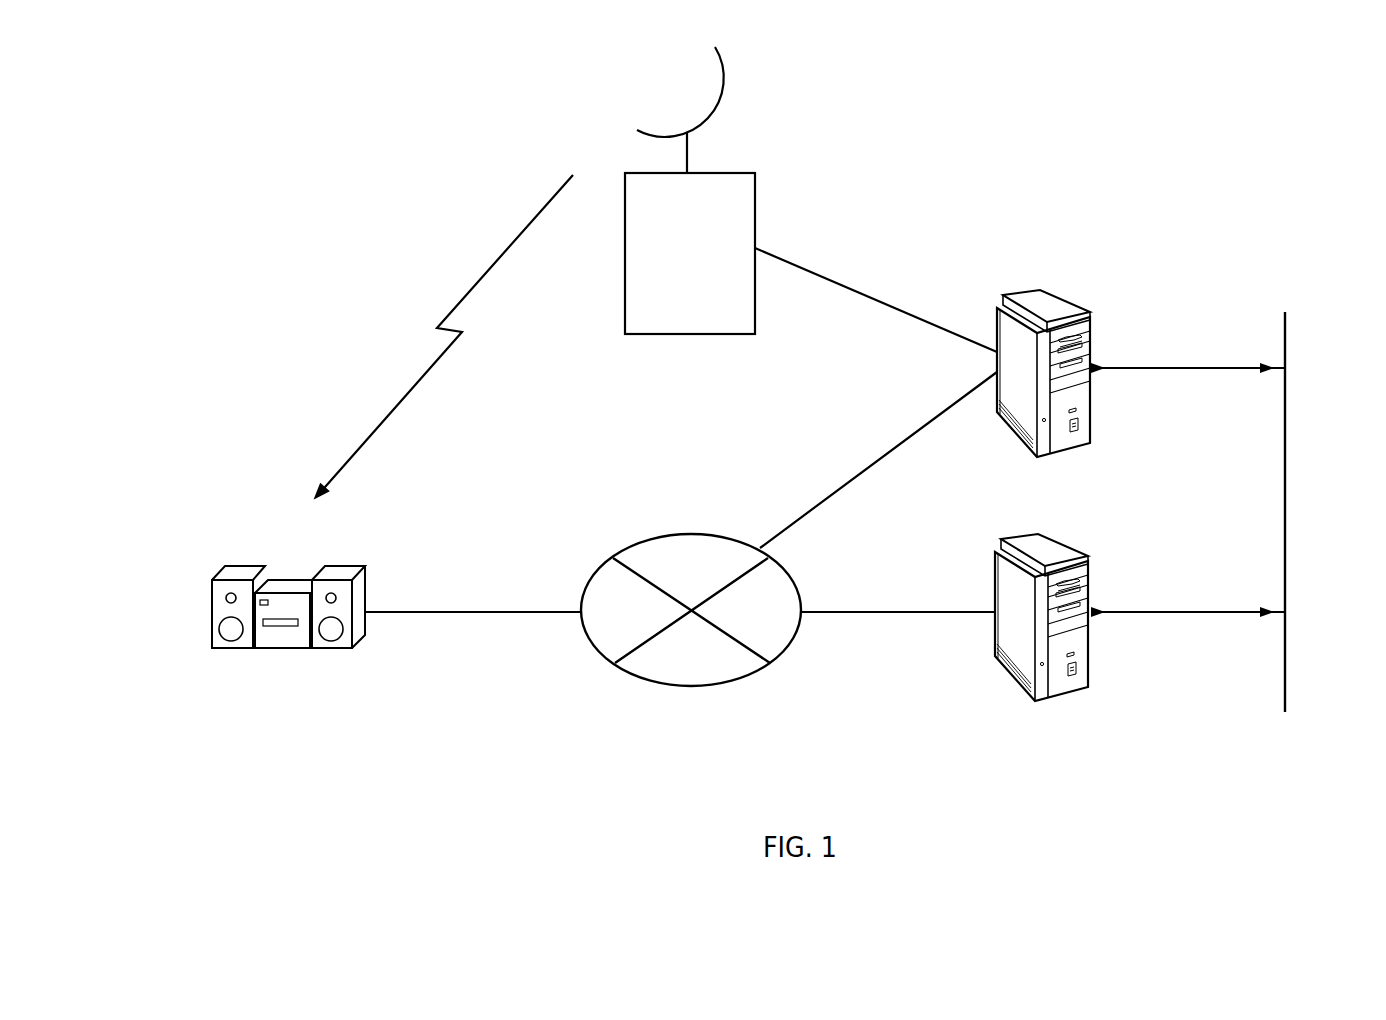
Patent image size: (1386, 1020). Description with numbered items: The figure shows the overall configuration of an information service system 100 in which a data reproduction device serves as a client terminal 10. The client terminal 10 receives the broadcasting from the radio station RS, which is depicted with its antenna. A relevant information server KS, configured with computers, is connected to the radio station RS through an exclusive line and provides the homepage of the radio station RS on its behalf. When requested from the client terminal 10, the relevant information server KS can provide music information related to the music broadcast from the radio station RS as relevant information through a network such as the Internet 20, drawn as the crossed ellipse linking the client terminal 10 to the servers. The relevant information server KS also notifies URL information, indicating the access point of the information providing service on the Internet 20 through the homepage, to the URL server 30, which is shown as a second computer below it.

The information service system 100 is at (338, 133).
The radio station RS is at (745, 173).
The relevant information server KS is at (1050, 297).
The URL server 30 is at (1050, 541).
The Internet 20 is at (745, 678).
The client terminal 10 is at (275, 648).